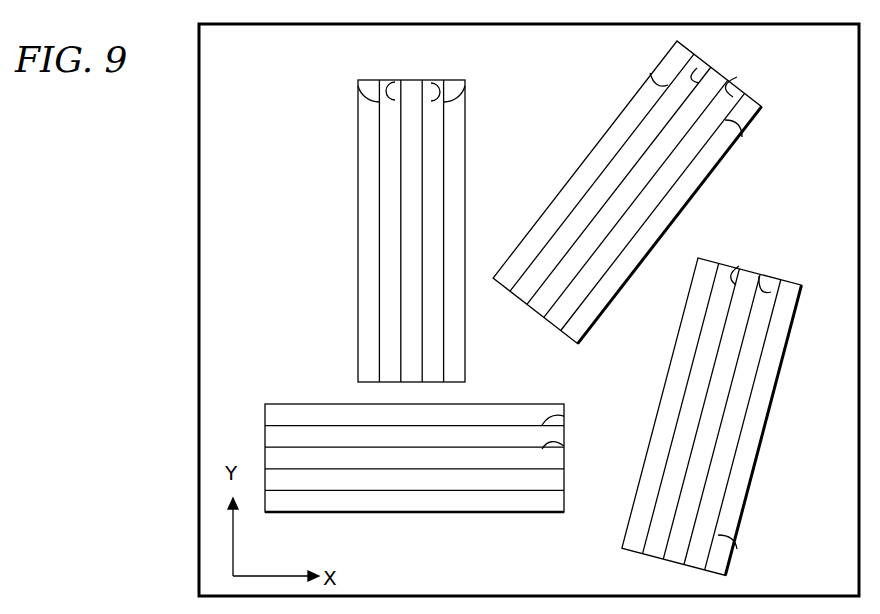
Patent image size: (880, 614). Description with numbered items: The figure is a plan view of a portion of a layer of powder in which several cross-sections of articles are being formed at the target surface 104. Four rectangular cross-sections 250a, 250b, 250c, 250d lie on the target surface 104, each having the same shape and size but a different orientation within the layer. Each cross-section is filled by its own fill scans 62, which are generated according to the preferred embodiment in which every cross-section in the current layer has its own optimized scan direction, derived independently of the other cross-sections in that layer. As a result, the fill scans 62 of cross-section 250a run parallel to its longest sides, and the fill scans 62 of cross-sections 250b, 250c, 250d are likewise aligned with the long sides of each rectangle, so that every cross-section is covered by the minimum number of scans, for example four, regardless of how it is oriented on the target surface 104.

The target surface 104 is at (198, 334).
The rectangular cross-section 250a is at (318, 403).
The rectangular cross-section 250b is at (767, 433).
The rectangular cross-section 250c is at (587, 157).
The rectangular cross-section 250d is at (358, 234).
The fill scans 62 is at (358, 87).